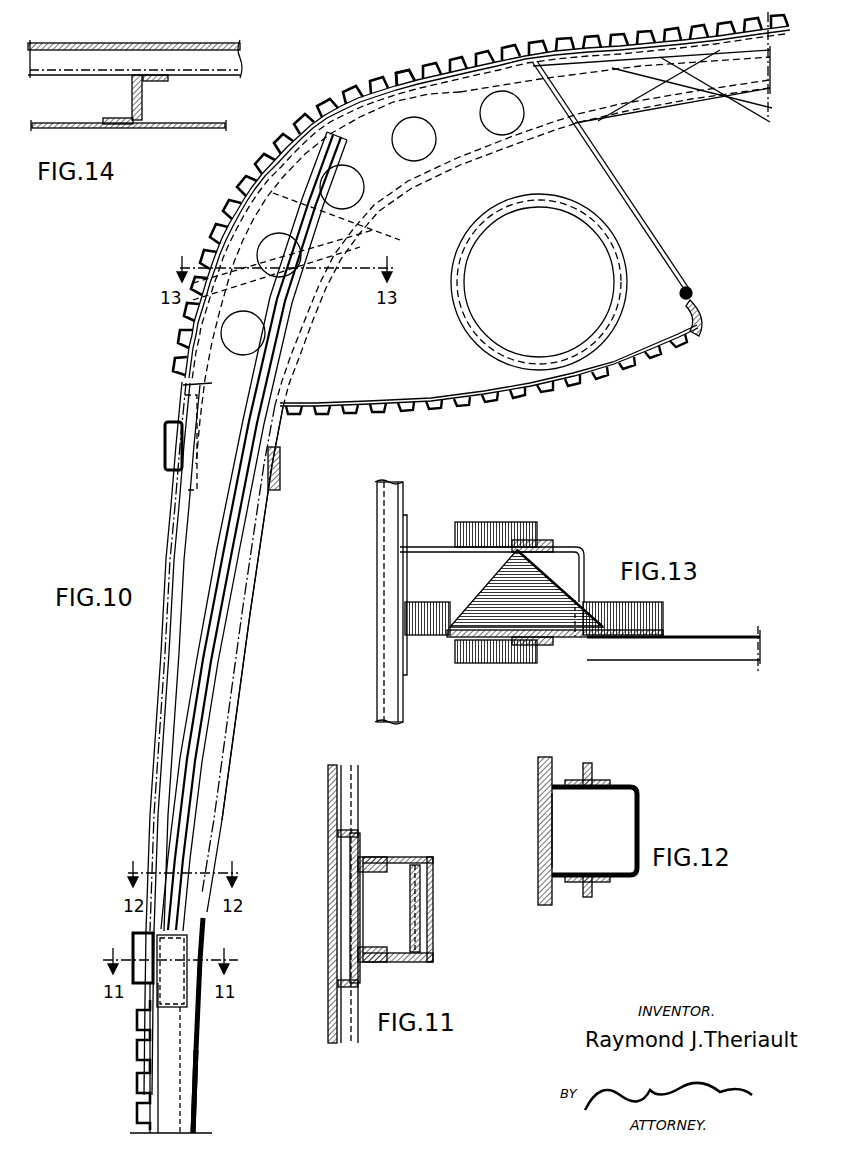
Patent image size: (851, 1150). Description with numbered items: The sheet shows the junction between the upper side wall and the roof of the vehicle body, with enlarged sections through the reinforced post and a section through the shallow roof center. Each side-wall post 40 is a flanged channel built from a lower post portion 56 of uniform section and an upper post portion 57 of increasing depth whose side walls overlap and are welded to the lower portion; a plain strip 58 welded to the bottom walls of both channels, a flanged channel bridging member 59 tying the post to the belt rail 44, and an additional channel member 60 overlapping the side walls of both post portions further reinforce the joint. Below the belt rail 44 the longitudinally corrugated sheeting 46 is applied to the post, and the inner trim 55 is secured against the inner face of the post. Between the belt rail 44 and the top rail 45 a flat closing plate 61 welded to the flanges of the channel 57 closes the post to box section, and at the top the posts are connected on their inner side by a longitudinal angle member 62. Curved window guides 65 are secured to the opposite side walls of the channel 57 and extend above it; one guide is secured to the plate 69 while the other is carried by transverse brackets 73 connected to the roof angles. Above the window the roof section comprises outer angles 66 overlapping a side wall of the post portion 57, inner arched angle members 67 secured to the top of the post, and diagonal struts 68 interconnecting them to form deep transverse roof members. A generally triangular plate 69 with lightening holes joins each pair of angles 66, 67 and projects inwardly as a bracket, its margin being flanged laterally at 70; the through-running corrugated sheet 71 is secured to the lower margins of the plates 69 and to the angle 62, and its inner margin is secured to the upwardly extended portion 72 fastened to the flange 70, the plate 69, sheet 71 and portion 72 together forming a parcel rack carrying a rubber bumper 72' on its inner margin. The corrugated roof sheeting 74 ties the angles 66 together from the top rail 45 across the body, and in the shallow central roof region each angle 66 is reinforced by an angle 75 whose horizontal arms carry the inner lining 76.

In FIG. 10, the post 40 is at (228, 771).
In FIG. 10, the belt rail 44 is at (147, 988).
In FIG. 11, the belt rail 44 is at (345, 781).
In FIG. 10, the top rail 45 is at (165, 447).
In FIG. 10, the longitudinally corrugated sheeting 46 is at (136, 1085).
In FIG. 10, the inner trim 55 is at (198, 1096).
In FIG. 10, the lower post portion 56 is at (197, 1034).
In FIG. 11, the lower post portion 56 is at (366, 857).
In FIG. 10, the upper post portion 57 is at (247, 640).
In FIG. 13, the upper post portion 57 is at (586, 549).
In FIG. 11, the upper post portion 57 is at (433, 926).
In FIG. 12, the upper post portion 57 is at (622, 788).
In FIG. 10, the plain strip 58 is at (190, 950).
In FIG. 11, the plain strip 58 is at (421, 897).
In FIG. 10, the flanged channel bridging member 59 is at (133, 940).
In FIG. 11, the flanged channel bridging member 59 is at (356, 833).
In FIG. 10, the channel member 60 is at (172, 858).
In FIG. 11, the channel member 60 is at (368, 912).
In FIG. 12, the channel member 60 is at (554, 833).
In FIG. 10, the flat closing plate 61 is at (160, 757).
In FIG. 12, the flat closing plate 61 is at (540, 791).
In FIG. 10, the angle member 62 is at (281, 458).
In FIG. 10, the curved window guide 65 is at (232, 558).
In FIG. 13, the curved window guide 65 is at (480, 664).
In FIG. 12, the curved window guide 65 is at (593, 770).
In FIG. 14, the outer angle 66 is at (153, 82).
In FIG. 10, the outer angle 66 is at (620, 62).
In FIG. 13, the outer angle 66 is at (440, 604).
In FIG. 10, the inner arched angle member 67 is at (630, 116).
In FIG. 13, the inner arched angle member 67 is at (665, 616).
In FIG. 10, the diagonal strut 68 is at (738, 68).
In FIG. 10, the plate 69 is at (410, 352).
In FIG. 13, the plate 69 is at (700, 638).
In FIG. 10, the lateral flange 70 is at (648, 238).
In FIG. 13, the lateral flange 70 is at (731, 658).
In FIG. 10, the longitudinally corrugated sheet 71 is at (487, 402).
In FIG. 10, the upwardly extended portion 72 is at (702, 285).
In FIG. 10, the rubber bumper 72' is at (716, 316).
In FIG. 10, the transverse bracket 73 is at (224, 240).
In FIG. 13, the transverse bracket 73 is at (558, 562).
In FIG. 14, the longitudinally corrugated roof sheeting 74 is at (216, 62).
In FIG. 10, the longitudinally corrugated roof sheeting 74 is at (404, 70).
In FIG. 14, the reinforcing angle 75 is at (133, 108).
In FIG. 14, the inner lining 76 is at (192, 129).